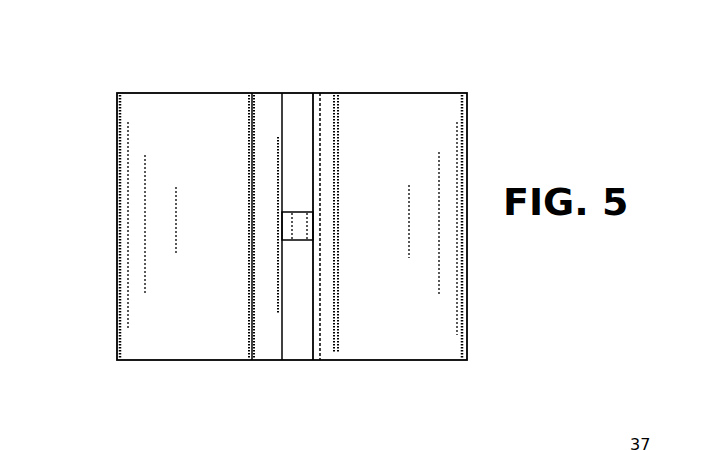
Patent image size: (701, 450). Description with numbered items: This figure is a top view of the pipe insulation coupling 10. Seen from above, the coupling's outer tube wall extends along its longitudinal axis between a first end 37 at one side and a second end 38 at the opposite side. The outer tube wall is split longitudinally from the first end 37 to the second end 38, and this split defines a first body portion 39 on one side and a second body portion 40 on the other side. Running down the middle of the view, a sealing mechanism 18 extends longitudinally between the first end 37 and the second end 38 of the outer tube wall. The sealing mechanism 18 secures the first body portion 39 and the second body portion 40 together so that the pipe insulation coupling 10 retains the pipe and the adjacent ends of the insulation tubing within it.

The pipe insulation coupling 10 is at (86, 212).
The sealing mechanism 18 is at (307, 78).
The first end 37 is at (368, 360).
The second end 38 is at (170, 92).
The first body portion 39 is at (173, 343).
The second body portion 40 is at (404, 338).